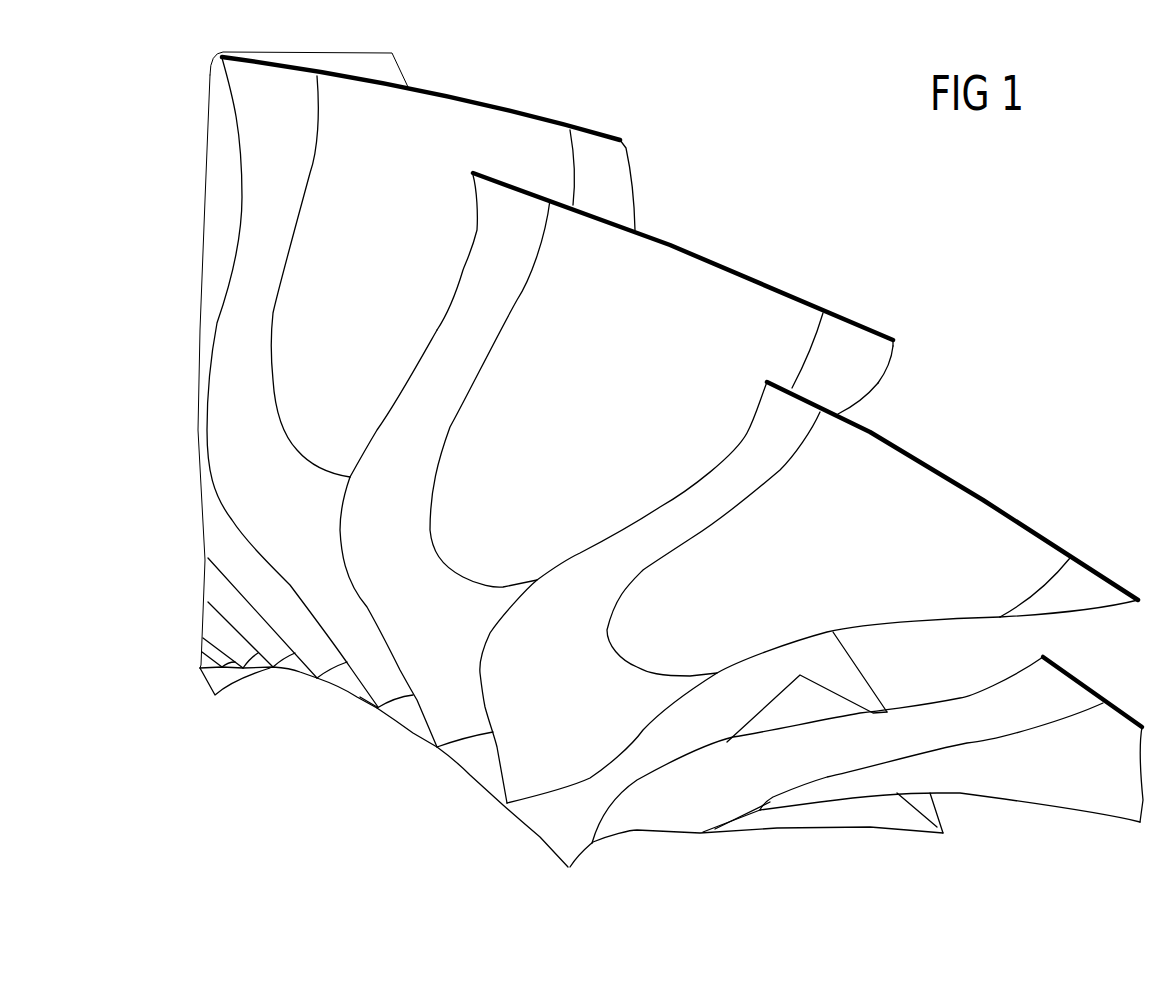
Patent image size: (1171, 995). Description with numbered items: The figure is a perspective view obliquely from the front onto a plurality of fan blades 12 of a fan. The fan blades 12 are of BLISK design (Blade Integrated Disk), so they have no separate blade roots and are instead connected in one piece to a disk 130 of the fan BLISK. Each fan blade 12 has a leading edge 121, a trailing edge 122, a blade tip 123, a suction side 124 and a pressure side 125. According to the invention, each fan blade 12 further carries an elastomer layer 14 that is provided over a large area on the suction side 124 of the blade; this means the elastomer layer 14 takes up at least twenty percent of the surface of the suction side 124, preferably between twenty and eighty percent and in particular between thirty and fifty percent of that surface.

The fan blade 12 is at (675, 459).
The elastomer layer 14 is at (601, 405).
The leading edge 121 is at (433, 340).
The trailing edge 122 is at (858, 400).
The blade tip 123 is at (703, 251).
The suction side 124 is at (480, 261).
The pressure side 125 is at (883, 372).
The disk 130 is at (410, 725).